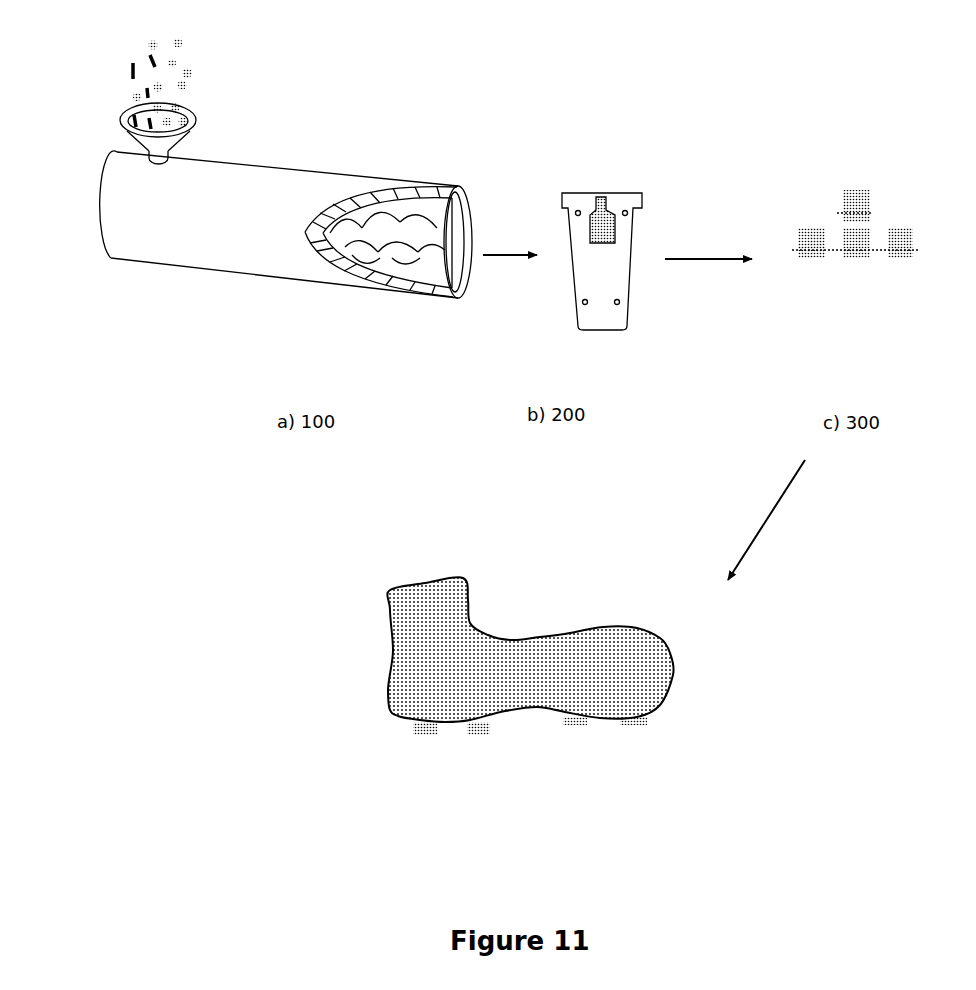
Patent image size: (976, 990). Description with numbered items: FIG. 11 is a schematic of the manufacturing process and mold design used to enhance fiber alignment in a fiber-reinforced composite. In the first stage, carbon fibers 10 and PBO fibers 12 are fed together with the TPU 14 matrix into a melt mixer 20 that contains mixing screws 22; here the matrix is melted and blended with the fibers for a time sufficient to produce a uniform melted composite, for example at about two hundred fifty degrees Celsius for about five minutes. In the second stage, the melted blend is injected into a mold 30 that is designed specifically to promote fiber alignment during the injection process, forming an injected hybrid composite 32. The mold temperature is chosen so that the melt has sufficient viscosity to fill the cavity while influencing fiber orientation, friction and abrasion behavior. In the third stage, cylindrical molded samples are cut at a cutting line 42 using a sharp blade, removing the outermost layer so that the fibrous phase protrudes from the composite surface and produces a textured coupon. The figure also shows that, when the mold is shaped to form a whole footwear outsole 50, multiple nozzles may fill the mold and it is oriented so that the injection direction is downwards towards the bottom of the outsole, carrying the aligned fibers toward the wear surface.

The carbon fibers 10 is at (130, 71).
The PBO fibers 12 is at (162, 98).
The TPU 14 is at (195, 69).
The melt mixer 20 is at (286, 265).
The mixing screws 22 is at (394, 265).
The mold 30 is at (629, 230).
The injected hybrid composite 32 is at (617, 224).
The cutting line 42 is at (875, 212).
The footwear outsole 50 is at (543, 716).